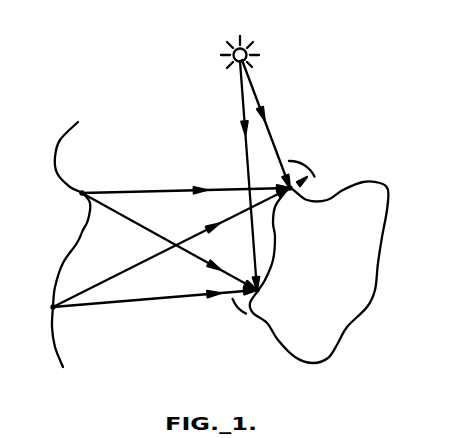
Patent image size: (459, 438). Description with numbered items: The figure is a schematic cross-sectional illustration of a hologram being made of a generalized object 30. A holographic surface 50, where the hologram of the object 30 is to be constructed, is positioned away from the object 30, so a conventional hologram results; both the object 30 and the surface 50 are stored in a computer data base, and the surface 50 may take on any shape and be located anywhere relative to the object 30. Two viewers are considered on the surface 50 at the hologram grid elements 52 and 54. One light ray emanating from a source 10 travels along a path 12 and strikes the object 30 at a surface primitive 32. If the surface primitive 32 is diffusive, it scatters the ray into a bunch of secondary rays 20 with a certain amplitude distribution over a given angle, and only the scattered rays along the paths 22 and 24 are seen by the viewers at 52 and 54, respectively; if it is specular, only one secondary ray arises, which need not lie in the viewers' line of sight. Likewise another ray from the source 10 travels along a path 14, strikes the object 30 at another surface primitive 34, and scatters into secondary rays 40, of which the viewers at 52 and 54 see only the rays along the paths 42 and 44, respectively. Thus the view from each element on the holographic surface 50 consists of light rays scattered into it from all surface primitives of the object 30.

The source 10 is at (246, 49).
The path 12 is at (262, 113).
The path 14 is at (244, 112).
The secondary rays 20 is at (303, 161).
The path 22 is at (237, 186).
The path 24 is at (228, 221).
The object 30 is at (374, 271).
The surface primitive 32 is at (293, 197).
The surface primitive 34 is at (262, 291).
The secondary rays 40 is at (234, 318).
The path 42 is at (201, 262).
The path 44 is at (158, 308).
The holographic surface 50 is at (61, 133).
The hologram grid element 52 is at (76, 196).
The hologram grid element 54 is at (52, 307).